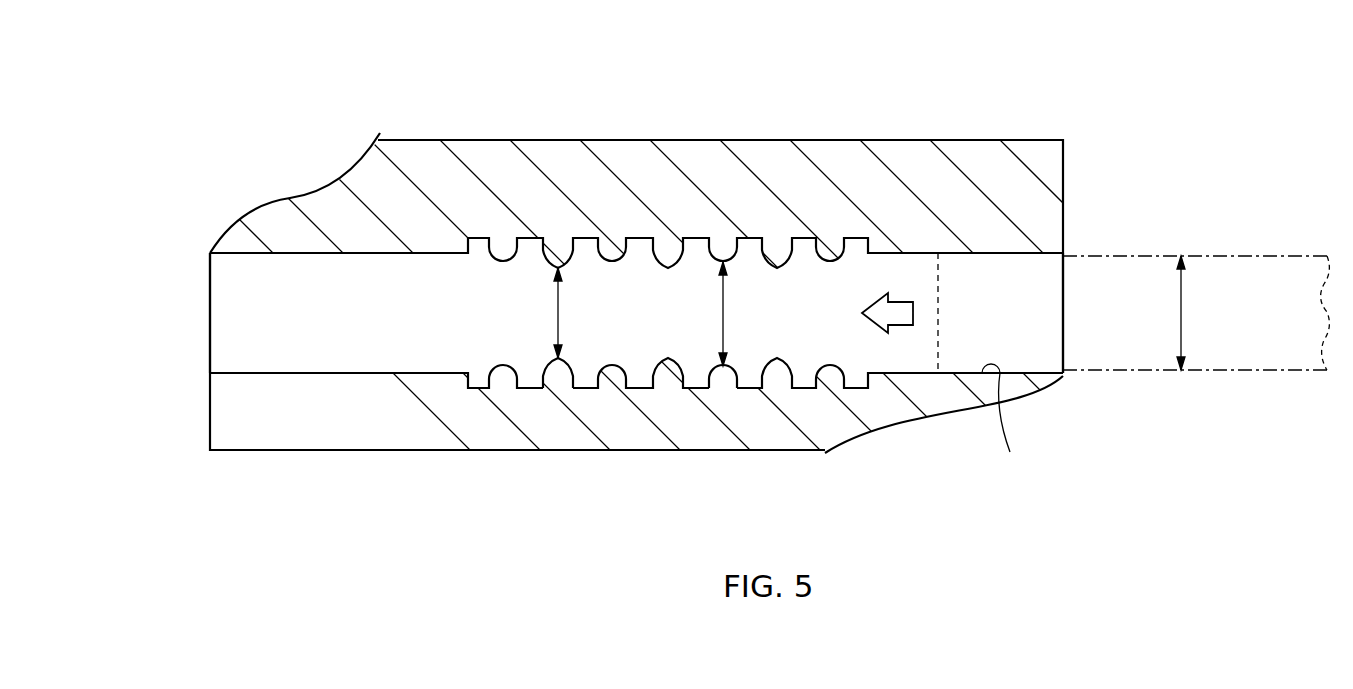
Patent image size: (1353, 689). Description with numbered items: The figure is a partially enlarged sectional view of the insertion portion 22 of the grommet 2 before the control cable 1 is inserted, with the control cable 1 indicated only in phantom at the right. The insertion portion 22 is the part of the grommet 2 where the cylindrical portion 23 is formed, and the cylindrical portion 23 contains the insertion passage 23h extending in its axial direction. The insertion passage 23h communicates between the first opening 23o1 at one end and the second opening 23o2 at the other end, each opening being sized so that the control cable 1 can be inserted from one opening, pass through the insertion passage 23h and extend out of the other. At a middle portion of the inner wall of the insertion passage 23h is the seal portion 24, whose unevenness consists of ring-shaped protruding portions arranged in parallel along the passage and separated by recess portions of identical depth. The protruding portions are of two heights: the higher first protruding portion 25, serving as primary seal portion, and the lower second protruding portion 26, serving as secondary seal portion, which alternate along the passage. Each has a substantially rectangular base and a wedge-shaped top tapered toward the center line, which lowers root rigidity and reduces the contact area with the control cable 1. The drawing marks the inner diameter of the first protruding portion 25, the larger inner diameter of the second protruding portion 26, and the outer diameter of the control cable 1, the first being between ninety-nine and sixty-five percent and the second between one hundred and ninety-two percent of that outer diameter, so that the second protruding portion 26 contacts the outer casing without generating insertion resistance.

The control cable 1 is at (1237, 228).
The grommet 2 is at (1067, 107).
The insertion portion 22 is at (577, 108).
The cylindrical portion 23 is at (765, 140).
The first opening 23o1 is at (190, 358).
The second opening 23o2 is at (1090, 277).
The insertion passage 23h is at (1010, 425).
The seal portion 24 is at (440, 343).
The first protruding portion 25 is at (571, 367).
The second protruding portion 26 is at (735, 370).